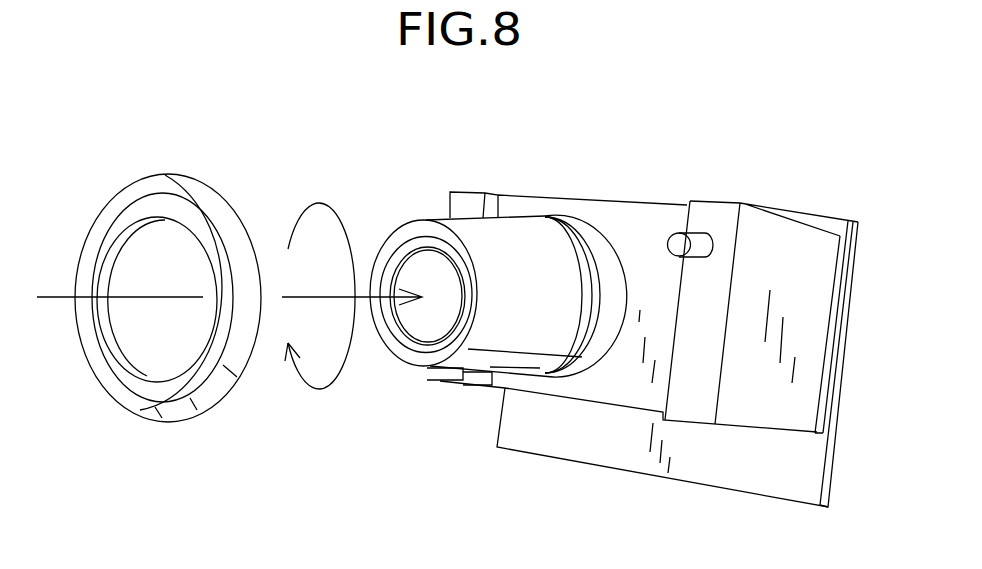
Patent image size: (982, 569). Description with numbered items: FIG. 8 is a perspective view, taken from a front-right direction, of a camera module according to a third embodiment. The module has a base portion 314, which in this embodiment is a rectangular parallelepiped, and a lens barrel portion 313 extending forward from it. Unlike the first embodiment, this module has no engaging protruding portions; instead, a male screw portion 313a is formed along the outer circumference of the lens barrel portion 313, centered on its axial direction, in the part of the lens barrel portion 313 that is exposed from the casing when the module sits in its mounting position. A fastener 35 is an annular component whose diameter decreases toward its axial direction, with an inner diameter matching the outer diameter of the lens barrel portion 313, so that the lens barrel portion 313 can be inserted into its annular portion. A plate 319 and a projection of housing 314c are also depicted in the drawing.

The fastener 35 is at (132, 164).
The lens barrel portion 313 is at (508, 238).
The male screw portion 313a is at (570, 242).
The base portion 314 is at (643, 202).
The projection of housing 314c is at (698, 242).
The plate 319 is at (833, 468).